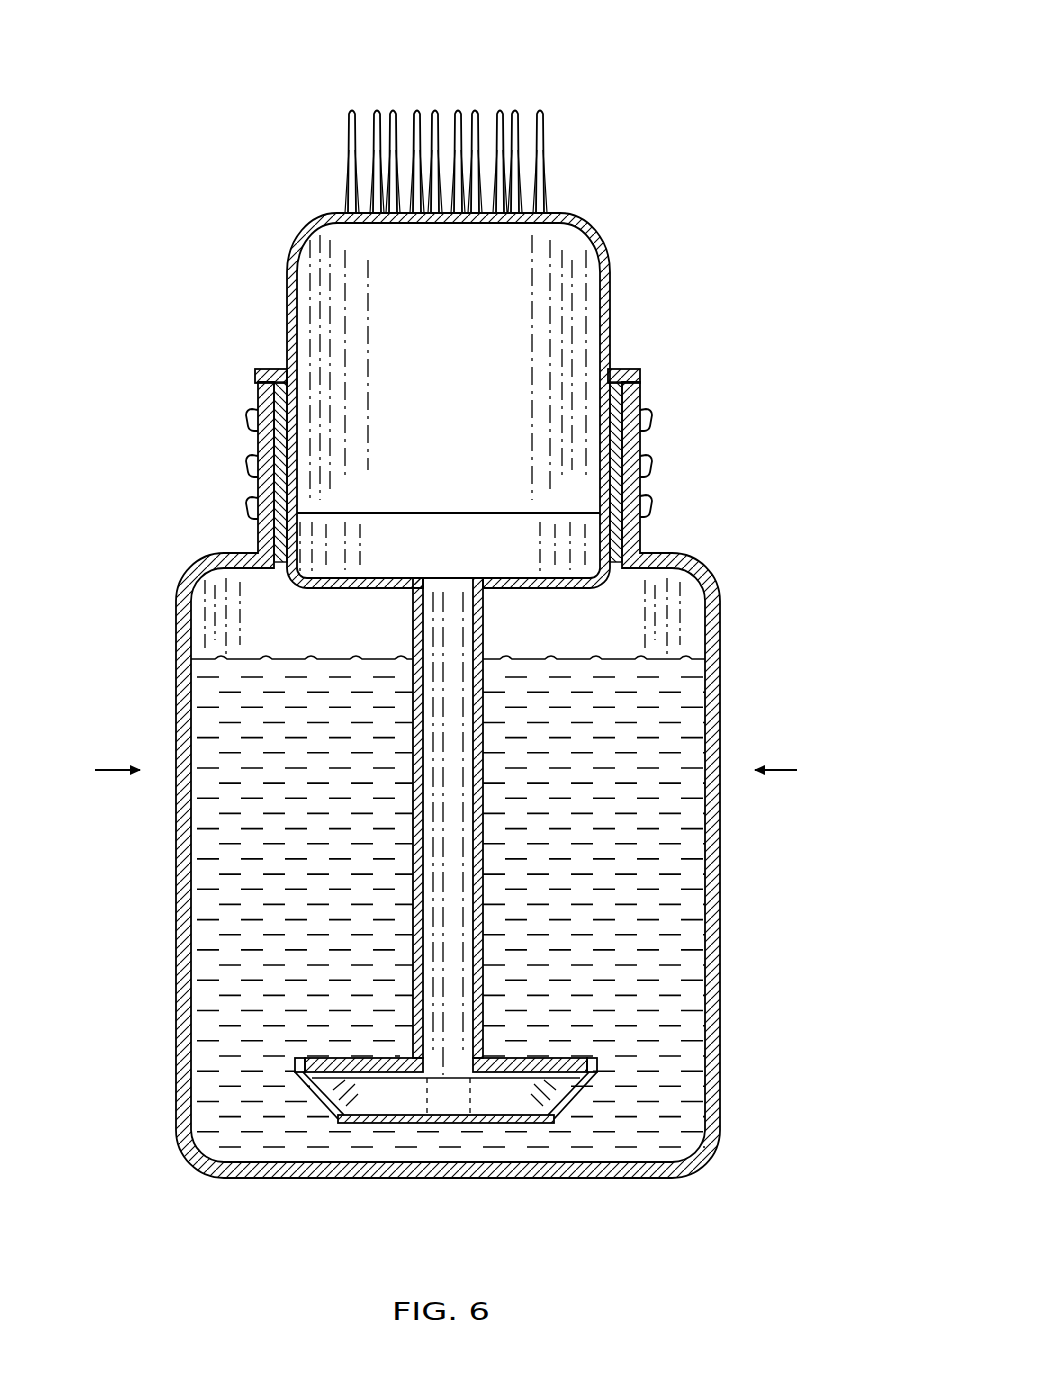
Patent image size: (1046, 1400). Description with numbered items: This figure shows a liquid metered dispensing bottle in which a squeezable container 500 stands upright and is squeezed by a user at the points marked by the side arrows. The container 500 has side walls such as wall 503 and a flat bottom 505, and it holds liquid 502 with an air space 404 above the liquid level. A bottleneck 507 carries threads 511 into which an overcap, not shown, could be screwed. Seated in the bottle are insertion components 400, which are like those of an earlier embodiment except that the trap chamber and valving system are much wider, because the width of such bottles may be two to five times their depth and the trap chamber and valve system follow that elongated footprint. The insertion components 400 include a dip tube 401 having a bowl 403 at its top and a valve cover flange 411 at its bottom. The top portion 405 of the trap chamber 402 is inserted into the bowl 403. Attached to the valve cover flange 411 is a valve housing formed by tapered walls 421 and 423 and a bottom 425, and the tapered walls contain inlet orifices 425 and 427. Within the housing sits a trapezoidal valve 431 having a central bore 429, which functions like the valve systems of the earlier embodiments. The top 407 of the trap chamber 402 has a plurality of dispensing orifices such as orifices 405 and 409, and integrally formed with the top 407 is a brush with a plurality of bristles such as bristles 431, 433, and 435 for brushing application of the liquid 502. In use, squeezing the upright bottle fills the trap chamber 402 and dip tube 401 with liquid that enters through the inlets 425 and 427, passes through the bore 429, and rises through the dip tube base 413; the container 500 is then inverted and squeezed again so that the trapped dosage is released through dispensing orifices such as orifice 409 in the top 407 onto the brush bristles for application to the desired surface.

The insertion components 400 is at (649, 306).
The dip tube 401 is at (410, 882).
The trap chamber 402 is at (430, 379).
The bowl 403 is at (358, 585).
The air space 404 is at (569, 633).
The top portion / dispensing orifice 405 is at (447, 223).
The top of trap chamber 407 is at (418, 108).
The dispensing orifice 409 is at (487, 223).
The valve cover flange 411 is at (350, 1058).
The dip tube base 413 is at (460, 1053).
The tapered wall 421 is at (594, 1072).
The tapered wall 423 is at (323, 1108).
The bottom / inlet orifice 425 is at (385, 1121).
The inlet orifice 427 is at (320, 1093).
The central bore 429 is at (445, 1098).
The trapezoidal valve / bristle 431 is at (435, 108).
The bristle 433 is at (458, 108).
The bristle 435 is at (477, 108).
The squeezable container 500 is at (750, 710).
The liquid 502 is at (598, 837).
The side wall 503 is at (722, 908).
The flat bottom 505 is at (628, 1180).
The bottleneck 507 is at (653, 481).
The threads 511 is at (653, 422).